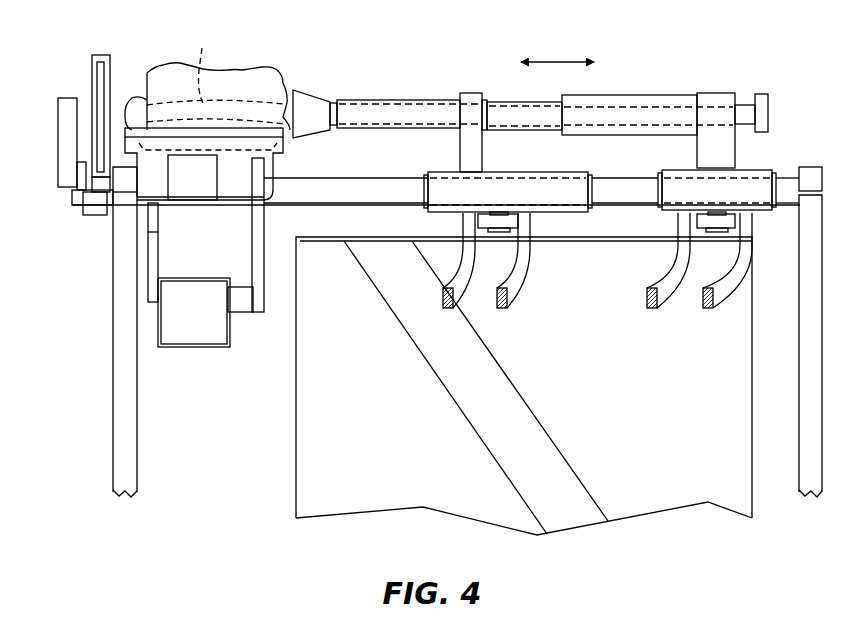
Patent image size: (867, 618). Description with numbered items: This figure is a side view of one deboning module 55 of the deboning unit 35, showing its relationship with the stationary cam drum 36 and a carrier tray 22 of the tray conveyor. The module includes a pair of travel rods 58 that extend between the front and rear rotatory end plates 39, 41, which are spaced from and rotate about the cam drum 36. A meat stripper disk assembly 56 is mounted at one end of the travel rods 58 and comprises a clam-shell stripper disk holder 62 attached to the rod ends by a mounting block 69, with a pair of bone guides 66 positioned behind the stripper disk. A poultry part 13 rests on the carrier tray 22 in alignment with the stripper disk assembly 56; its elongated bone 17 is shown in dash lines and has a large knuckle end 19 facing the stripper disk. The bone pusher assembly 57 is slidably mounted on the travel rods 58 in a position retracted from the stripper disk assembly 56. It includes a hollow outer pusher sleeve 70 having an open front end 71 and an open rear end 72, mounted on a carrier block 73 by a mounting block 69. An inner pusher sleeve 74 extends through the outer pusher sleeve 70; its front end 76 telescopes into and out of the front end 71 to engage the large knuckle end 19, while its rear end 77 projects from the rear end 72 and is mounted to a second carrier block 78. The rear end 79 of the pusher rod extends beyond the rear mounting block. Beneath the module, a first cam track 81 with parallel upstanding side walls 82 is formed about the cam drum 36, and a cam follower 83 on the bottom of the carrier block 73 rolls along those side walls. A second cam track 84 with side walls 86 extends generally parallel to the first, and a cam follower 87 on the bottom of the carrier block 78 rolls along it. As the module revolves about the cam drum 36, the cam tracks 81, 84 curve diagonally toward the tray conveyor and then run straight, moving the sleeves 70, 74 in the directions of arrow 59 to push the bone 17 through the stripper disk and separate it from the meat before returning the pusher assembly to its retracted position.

The poultry part 13 is at (207, 77).
The bone 17 is at (204, 64).
The large knuckle end 19 is at (243, 112).
The carrier tray 22 is at (277, 153).
The deboning unit 35 is at (793, 264).
The cam drum 36 is at (294, 458).
The front rotatory end plate 39 is at (112, 372).
The rear rotatory end plate 41 is at (810, 363).
The deboning module 55 is at (421, 98).
The meat stripper disk assembly 56 is at (418, 120).
The bone pusher assembly 57 is at (684, 96).
The travel rods 58 is at (363, 177).
The arrow 59 is at (556, 58).
The stripper disk holder 62 is at (108, 80).
The bone guides 66 is at (65, 120).
The mounting block 69 is at (468, 143).
The outer pusher sleeve 70 is at (405, 90).
The front end of outer pusher sleeve 71 is at (292, 88).
The rear end of outer pusher sleeve 72 is at (487, 98).
The carrier block 73 is at (453, 195).
The inner pusher sleeve 74 is at (489, 130).
The front end of inner pusher sleeve 76 is at (357, 100).
The rear end of inner pusher sleeve 77 is at (558, 136).
The carrier block 78 is at (680, 195).
The rear end of pusher rod 79 is at (768, 112).
The first cam track 81 is at (522, 294).
The side walls of first cam track 82 is at (455, 273).
The cam follower 83 is at (483, 232).
The second cam track 84 is at (729, 295).
The side walls of second cam track 86 is at (667, 270).
The cam follower 87 is at (697, 232).